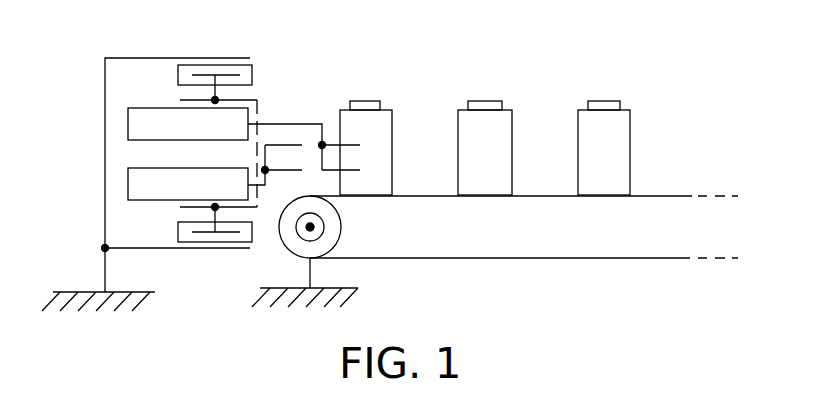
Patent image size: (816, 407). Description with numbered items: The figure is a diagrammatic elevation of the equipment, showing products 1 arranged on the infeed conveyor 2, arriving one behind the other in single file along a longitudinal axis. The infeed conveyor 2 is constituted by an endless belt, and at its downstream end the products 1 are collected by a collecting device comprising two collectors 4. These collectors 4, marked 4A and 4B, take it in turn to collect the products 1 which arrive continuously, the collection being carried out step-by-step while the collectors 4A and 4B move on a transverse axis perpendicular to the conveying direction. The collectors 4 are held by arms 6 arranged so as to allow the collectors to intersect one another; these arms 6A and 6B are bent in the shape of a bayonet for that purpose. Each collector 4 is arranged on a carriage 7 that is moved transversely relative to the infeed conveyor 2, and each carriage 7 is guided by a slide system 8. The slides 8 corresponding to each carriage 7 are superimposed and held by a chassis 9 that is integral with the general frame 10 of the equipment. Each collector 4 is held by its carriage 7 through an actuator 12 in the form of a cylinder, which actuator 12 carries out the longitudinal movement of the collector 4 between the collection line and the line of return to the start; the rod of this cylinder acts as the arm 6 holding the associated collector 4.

The products 1 is at (378, 133).
The infeed conveyor 2 is at (666, 195).
The collectors 4 is at (335, 117).
The collector 4A is at (352, 141).
The collector 4B is at (277, 141).
The arms 6 is at (273, 187).
The arm 6A is at (311, 119).
The arm 6B is at (262, 186).
The carriage 7 is at (214, 80).
The slide system 8 is at (253, 68).
The chassis 9 is at (105, 148).
The general frame 10 is at (70, 290).
The actuator 12 is at (128, 118).